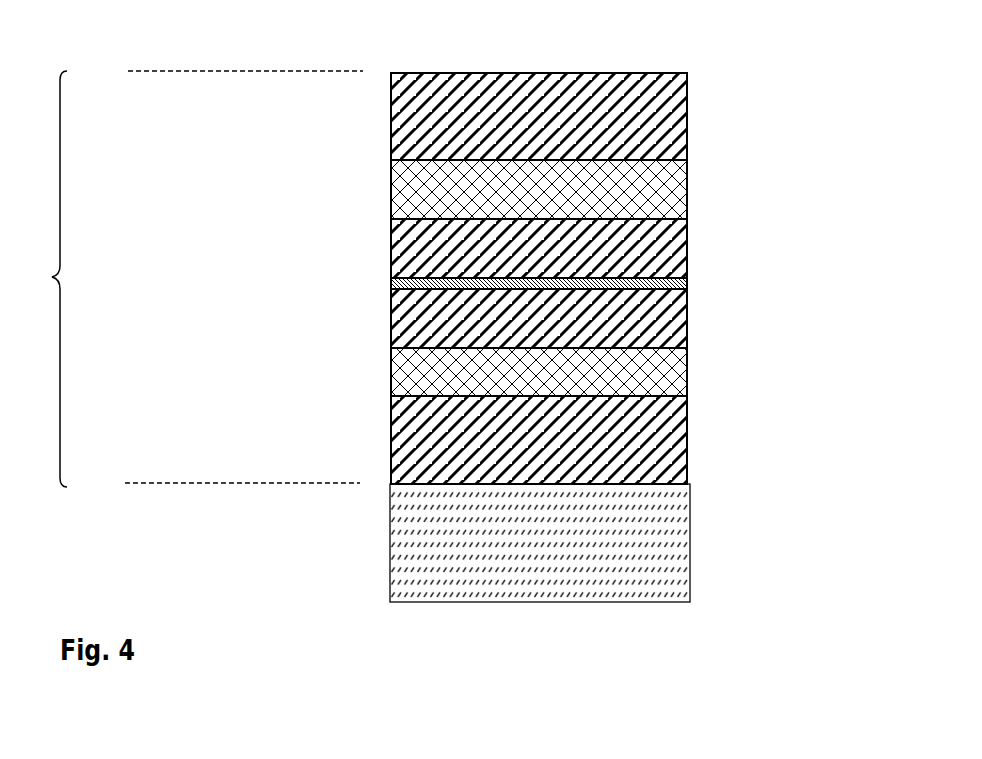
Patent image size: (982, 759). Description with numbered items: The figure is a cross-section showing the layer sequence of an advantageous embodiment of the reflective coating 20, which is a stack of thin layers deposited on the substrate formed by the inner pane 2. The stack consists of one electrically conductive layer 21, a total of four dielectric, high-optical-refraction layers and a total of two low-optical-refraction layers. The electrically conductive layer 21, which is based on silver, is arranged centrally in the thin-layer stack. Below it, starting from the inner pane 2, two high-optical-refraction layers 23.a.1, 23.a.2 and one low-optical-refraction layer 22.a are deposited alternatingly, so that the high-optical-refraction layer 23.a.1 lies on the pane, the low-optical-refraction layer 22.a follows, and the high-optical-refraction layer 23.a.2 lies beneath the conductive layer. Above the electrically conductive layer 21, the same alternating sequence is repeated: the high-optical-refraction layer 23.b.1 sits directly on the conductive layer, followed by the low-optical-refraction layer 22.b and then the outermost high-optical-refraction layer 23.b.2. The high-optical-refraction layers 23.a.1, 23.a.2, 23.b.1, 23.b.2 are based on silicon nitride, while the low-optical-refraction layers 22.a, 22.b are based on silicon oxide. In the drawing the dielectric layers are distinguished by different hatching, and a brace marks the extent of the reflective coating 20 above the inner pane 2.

The reflective coating 20 is at (349, 279).
The high-optical-refraction layer 23.b.2 is at (676, 146).
The low-optical-refraction layer 22.b is at (420, 188).
The high-optical-refraction layer 23.b.1 is at (676, 264).
The electrically conductive layer 21 is at (415, 312).
The high-optical-refraction layer 23.a.2 is at (676, 333).
The low-optical-refraction layer 22.a is at (415, 378).
The high-optical-refraction layer 23.a.1 is at (676, 425).
The inner pane 2 is at (655, 550).